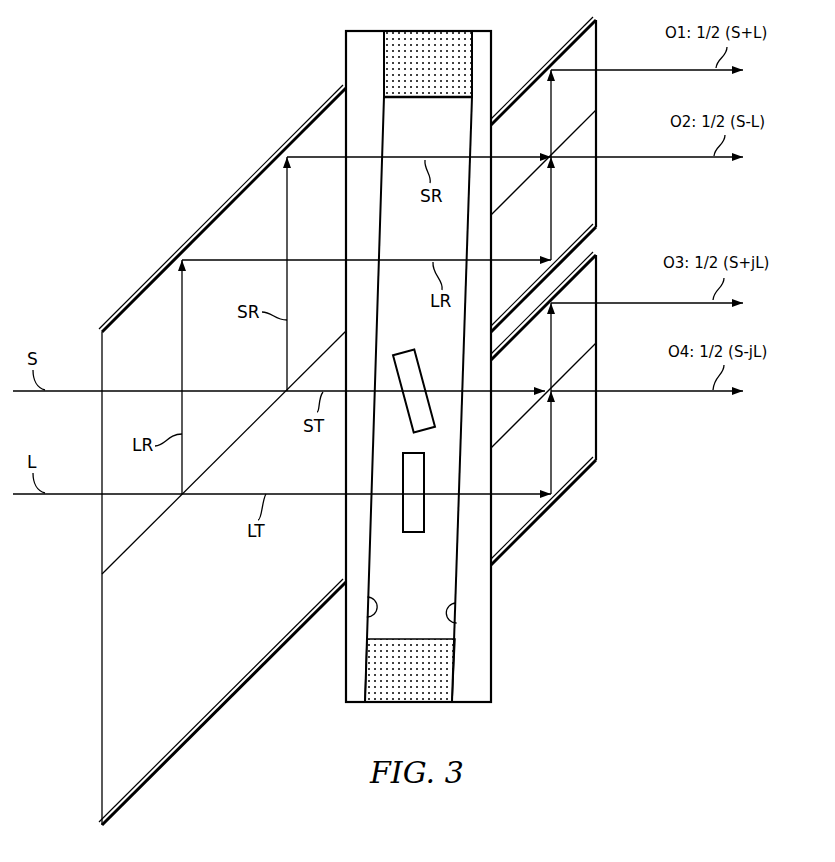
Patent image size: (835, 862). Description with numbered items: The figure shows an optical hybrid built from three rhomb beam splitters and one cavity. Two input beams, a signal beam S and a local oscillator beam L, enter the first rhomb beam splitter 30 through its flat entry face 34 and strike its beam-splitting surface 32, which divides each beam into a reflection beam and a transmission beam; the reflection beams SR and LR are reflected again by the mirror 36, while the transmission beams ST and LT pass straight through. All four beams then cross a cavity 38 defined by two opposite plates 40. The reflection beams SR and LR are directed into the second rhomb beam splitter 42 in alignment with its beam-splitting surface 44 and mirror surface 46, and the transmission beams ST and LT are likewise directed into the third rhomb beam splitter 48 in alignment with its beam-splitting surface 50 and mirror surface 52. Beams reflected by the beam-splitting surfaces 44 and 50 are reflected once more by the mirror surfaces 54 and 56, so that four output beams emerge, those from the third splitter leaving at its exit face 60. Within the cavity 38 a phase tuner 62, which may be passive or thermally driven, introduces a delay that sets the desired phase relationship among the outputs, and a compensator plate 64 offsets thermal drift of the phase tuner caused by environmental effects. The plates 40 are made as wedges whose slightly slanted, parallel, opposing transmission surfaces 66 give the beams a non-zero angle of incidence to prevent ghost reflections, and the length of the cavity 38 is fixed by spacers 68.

The first rhomb beam splitter 30 is at (198, 455).
The beam-splitting surface 32 is at (247, 432).
The flat entry face 34 is at (102, 428).
The mirror 36 is at (237, 213).
The cavity 38 is at (438, 136).
The plates 40 is at (418, 366).
The second rhomb beam splitter 42 is at (571, 174).
The beam-splitting surface 44 is at (587, 112).
The mirror surface 46 is at (587, 220).
The third rhomb beam splitter 48 is at (570, 408).
The beam-splitting surface 50 is at (585, 345).
The mirror surface 52 is at (583, 455).
The mirror surface 54 is at (579, 47).
The mirror surface 56 is at (583, 280).
The exit face 60 is at (596, 408).
The phase tuner 62 is at (404, 350).
The compensator plate 64 is at (413, 533).
The transmission surfaces 66 is at (367, 620).
The spacers 68 is at (438, 76).